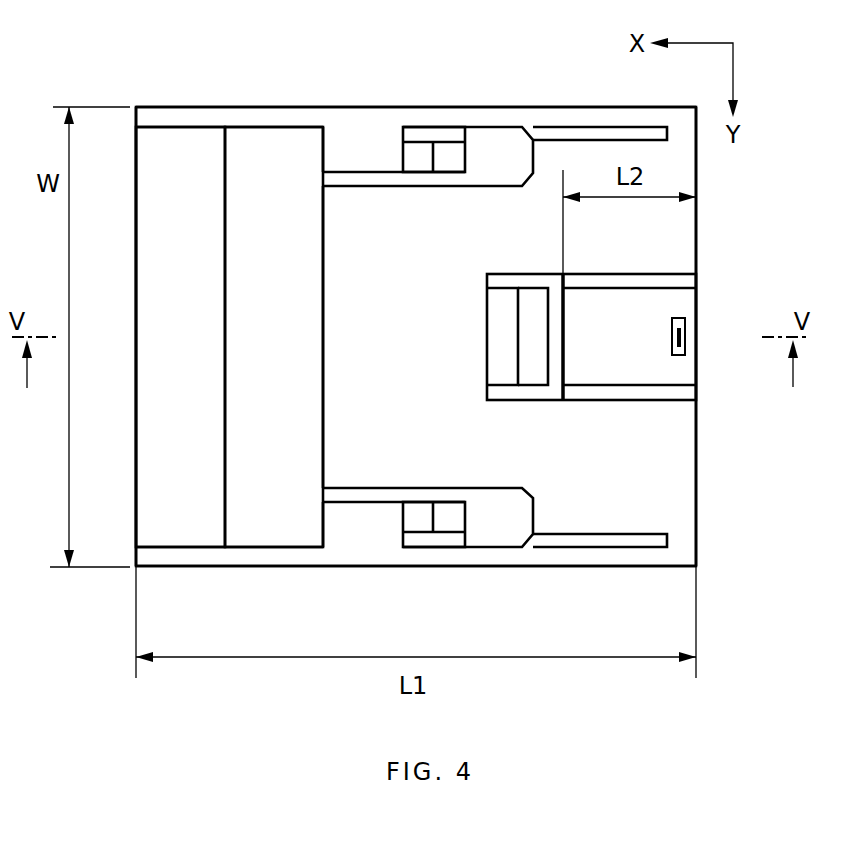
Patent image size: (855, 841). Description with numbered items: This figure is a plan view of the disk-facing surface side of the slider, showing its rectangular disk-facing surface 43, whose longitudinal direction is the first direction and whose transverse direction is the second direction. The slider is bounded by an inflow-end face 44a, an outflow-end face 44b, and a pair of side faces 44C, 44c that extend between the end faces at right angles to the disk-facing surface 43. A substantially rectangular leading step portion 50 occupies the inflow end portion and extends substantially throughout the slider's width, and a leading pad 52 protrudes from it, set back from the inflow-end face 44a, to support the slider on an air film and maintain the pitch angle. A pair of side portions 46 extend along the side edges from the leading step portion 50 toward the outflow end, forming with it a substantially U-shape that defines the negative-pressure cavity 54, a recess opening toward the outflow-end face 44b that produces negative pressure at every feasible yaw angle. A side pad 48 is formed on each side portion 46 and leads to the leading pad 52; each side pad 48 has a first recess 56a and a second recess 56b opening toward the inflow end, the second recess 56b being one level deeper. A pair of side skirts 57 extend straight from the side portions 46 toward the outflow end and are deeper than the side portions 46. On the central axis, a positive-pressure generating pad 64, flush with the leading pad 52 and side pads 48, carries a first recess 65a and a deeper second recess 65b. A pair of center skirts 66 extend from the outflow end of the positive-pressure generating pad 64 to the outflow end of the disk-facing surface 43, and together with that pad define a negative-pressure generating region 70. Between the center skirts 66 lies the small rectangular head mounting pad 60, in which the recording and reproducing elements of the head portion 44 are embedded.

The disk-facing surface 43 is at (285, 190).
The head portion 44 is at (688, 340).
The inflow-end face 44a is at (136, 470).
The outflow-end face 44b is at (697, 477).
The side face 44C is at (371, 107).
The side face 44c is at (312, 566).
The side portion 46 is at (462, 124).
The side pad 48 is at (497, 162).
The leading step portion 50 is at (185, 148).
The leading pad 52 is at (255, 148).
The negative-pressure cavity 54 is at (462, 351).
The first recess 56a is at (448, 520).
The second recess 56b is at (417, 518).
The side skirt 57 is at (585, 135).
The head mounting pad 60 is at (688, 323).
The positive-pressure generating pad 64 is at (558, 302).
The first recess 65a is at (532, 368).
The second recess 65b is at (503, 367).
The center skirt 66 is at (633, 274).
The negative-pressure generating region 70 is at (625, 365).